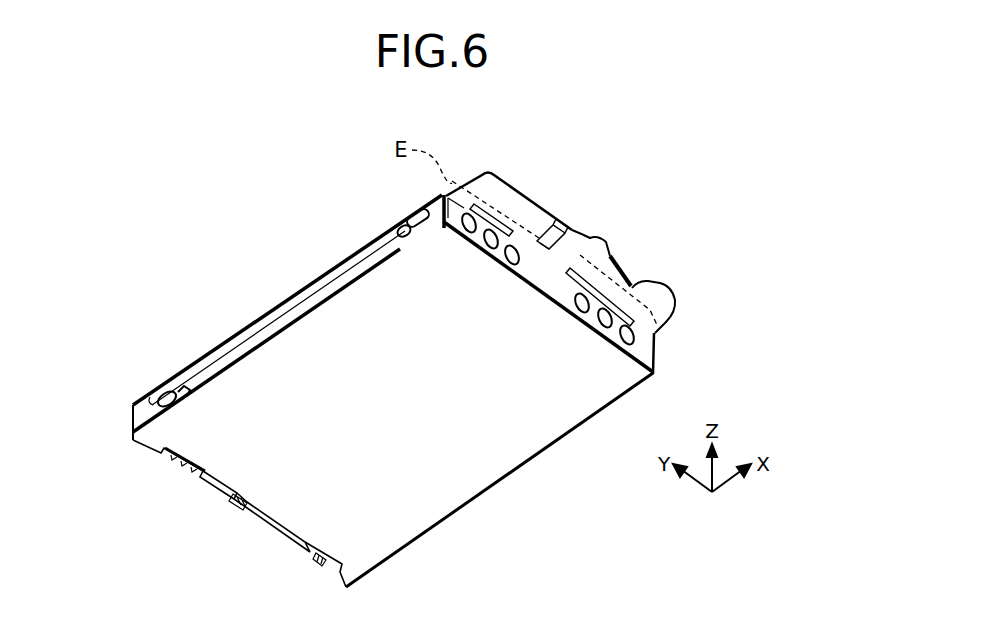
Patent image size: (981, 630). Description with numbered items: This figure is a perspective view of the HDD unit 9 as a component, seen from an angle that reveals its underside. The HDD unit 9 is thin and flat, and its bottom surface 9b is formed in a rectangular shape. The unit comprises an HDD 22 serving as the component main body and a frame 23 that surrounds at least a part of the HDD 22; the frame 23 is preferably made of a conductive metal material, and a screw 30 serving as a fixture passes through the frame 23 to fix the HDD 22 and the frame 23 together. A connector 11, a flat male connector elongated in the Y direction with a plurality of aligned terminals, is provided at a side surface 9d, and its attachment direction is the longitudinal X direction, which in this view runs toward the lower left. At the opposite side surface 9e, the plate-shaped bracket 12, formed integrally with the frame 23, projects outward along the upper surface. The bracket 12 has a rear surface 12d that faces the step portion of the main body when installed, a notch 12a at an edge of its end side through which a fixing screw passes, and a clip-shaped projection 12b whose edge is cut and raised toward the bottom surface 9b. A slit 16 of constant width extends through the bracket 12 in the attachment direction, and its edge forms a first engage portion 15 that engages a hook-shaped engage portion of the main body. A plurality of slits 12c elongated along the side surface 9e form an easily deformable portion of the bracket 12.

The HDD unit 9 is at (304, 197).
The bottom surface 9b is at (443, 493).
The side surface 9d is at (334, 577).
The side surface 9e is at (655, 347).
The connector 11 is at (270, 544).
The bracket 12 is at (606, 232).
The notch 12a is at (596, 244).
The clip-shaped projection 12b is at (626, 276).
The slits 12c is at (490, 208).
The rear surface 12d is at (668, 314).
The first engage portion 15 is at (572, 232).
The slit 16 is at (556, 224).
The HDD 22 is at (540, 440).
The frame 23 is at (128, 394).
The screw 30 is at (172, 388).